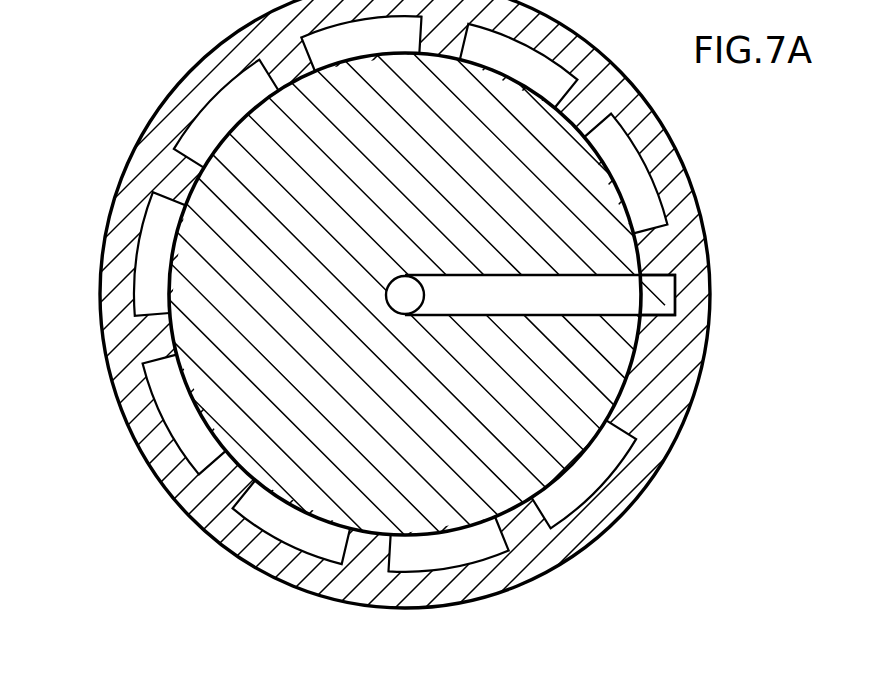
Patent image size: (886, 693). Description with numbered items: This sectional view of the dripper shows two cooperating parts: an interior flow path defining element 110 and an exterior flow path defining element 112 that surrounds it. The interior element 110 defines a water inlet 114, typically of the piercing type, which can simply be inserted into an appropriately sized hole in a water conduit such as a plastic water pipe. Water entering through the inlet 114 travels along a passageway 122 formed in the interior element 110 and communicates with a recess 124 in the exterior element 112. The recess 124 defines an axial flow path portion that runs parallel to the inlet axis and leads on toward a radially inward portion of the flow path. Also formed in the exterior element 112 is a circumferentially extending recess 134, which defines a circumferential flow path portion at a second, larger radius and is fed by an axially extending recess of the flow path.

The interior flow path defining element 110 is at (240, 387).
The exterior flow path defining element 112 is at (115, 310).
The water inlet 114 is at (385, 290).
The passageway 122 is at (560, 298).
The recess 124 is at (662, 292).
The circumferentially extending recess 134 is at (627, 172).